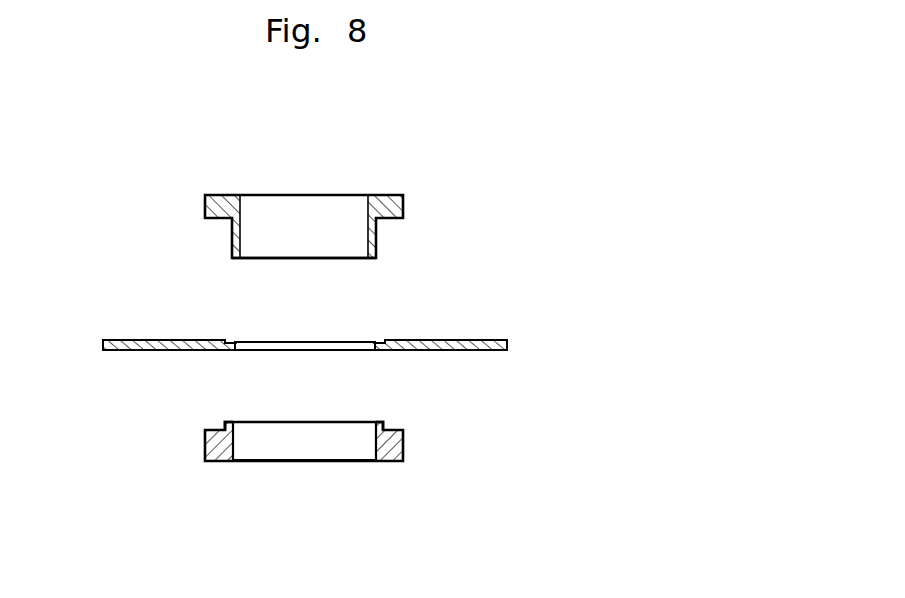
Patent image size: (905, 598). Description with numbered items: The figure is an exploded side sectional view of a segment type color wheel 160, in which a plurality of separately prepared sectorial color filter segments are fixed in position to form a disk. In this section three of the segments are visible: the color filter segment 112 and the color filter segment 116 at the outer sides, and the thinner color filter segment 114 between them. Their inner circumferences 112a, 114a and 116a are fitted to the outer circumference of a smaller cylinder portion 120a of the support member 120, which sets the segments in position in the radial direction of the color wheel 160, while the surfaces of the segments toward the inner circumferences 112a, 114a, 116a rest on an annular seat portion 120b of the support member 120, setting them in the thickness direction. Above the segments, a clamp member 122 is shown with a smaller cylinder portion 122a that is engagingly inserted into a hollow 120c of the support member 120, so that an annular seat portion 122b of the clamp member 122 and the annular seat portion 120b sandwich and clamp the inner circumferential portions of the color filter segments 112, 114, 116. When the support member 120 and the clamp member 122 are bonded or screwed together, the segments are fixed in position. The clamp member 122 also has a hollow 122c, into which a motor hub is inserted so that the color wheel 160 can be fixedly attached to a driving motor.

The segment type color wheel 160 is at (553, 205).
The clamp member 122 is at (348, 182).
The smaller cylinder portion of the clamp member 122a is at (231, 245).
The annular seat portion of the clamp member 122b is at (218, 225).
The hollow of the clamp member 122c is at (250, 195).
The color filter segment 112 is at (125, 340).
The inner circumference of the color filter segment 112a is at (235, 340).
The color filter segment 114 is at (330, 342).
The inner circumference of the color filter segment 114a is at (270, 342).
The color filter segment 116 is at (497, 338).
The inner circumference of the color filter segment 116a is at (372, 342).
The support member 120 is at (343, 478).
The smaller cylinder portion of the support member 120a is at (387, 430).
The annular seat portion of the support member 120b is at (393, 432).
The hollow of the support member 120c is at (240, 430).